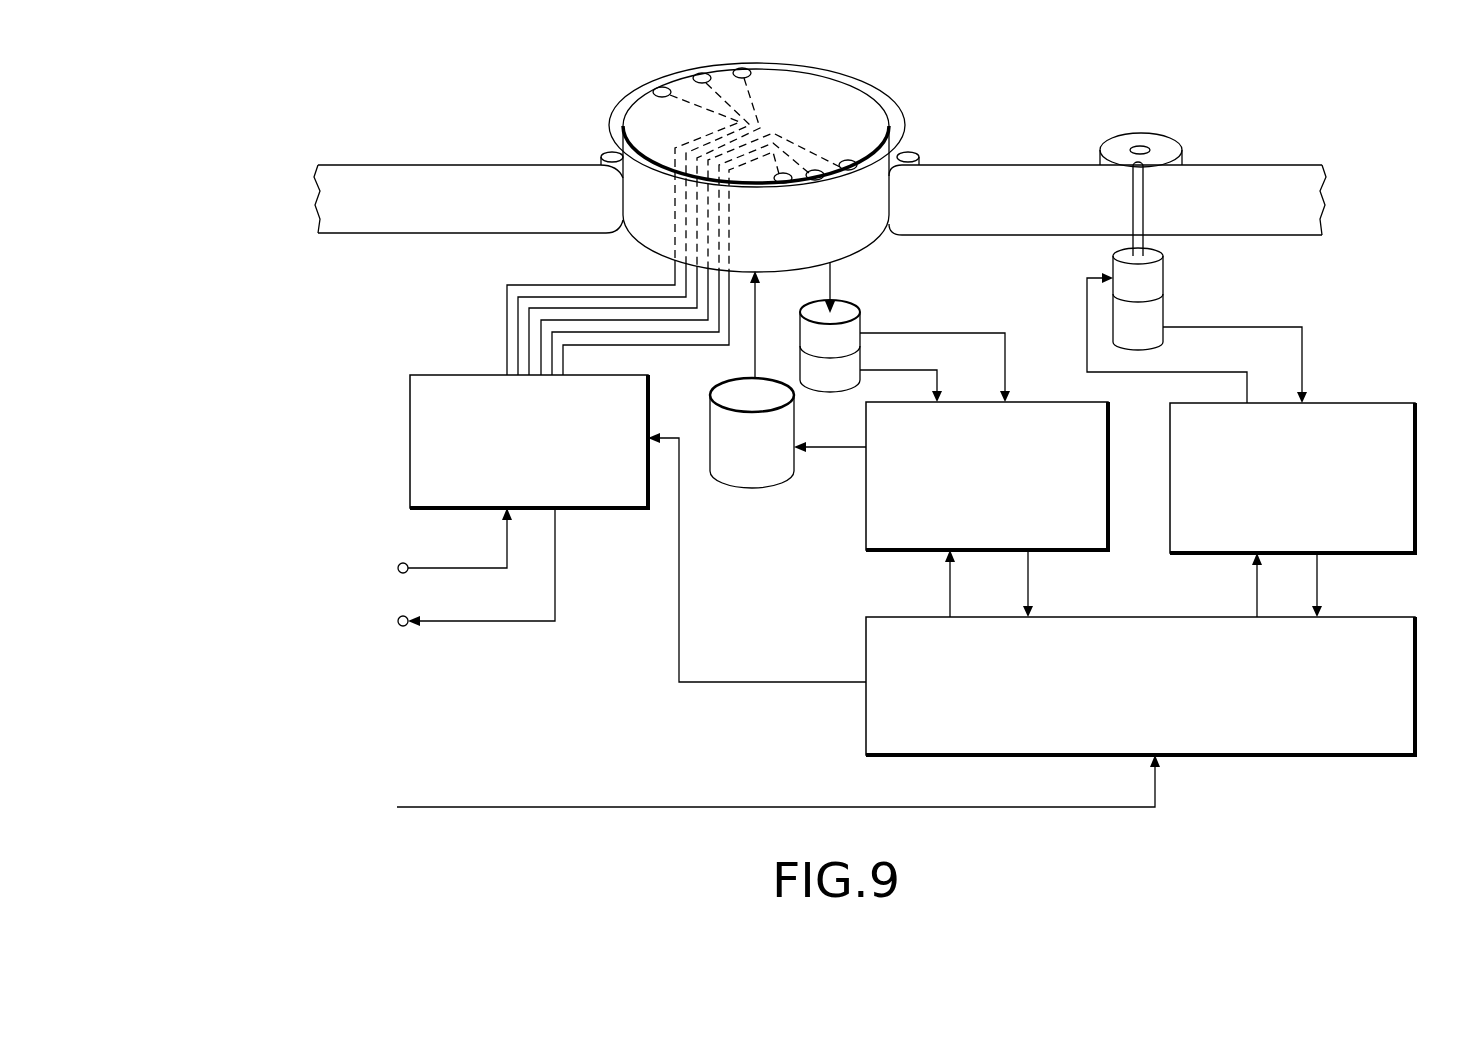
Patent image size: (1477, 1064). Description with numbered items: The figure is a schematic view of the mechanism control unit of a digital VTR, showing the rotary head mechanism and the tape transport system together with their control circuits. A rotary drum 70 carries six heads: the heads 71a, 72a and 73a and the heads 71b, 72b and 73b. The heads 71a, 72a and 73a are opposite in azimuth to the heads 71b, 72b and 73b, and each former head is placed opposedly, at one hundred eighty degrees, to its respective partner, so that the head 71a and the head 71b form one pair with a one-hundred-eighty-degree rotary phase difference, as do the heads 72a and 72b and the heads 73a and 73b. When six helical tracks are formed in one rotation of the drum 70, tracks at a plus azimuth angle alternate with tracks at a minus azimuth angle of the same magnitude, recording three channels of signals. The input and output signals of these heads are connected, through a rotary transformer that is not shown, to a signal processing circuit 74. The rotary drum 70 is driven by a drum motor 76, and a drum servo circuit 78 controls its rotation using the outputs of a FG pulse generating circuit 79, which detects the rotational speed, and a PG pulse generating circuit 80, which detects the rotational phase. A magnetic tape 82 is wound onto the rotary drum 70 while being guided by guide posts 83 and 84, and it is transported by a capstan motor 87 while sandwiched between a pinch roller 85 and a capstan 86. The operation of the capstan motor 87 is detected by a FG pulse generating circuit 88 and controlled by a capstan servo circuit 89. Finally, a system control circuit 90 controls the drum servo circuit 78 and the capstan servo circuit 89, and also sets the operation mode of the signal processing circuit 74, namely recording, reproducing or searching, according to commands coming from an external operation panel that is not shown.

The rotary drum 70 is at (872, 237).
The rotary head 71a is at (661, 86).
The rotary head 71b is at (852, 160).
The head 72a is at (702, 73).
The head 72b is at (817, 170).
The head 73a is at (744, 68).
The head 73b is at (786, 173).
The signal processing circuit 74 is at (443, 375).
The drum motor 76 is at (787, 478).
The drum servo circuit 78 is at (1038, 402).
The FG pulse generating circuit 79 is at (858, 323).
The PG pulse generating circuit 80 is at (822, 393).
The magnetic tape 82 is at (370, 165).
The guide post 83 is at (603, 152).
The guide post 84 is at (919, 153).
The pinch roller 85 is at (1170, 149).
The capstan 86 is at (1143, 218).
The capstan motor 87 is at (1163, 281).
The FG pulse generating circuit 88 is at (1163, 319).
The capstan servo circuit 89 is at (1350, 403).
The system control circuit 90 is at (1415, 692).